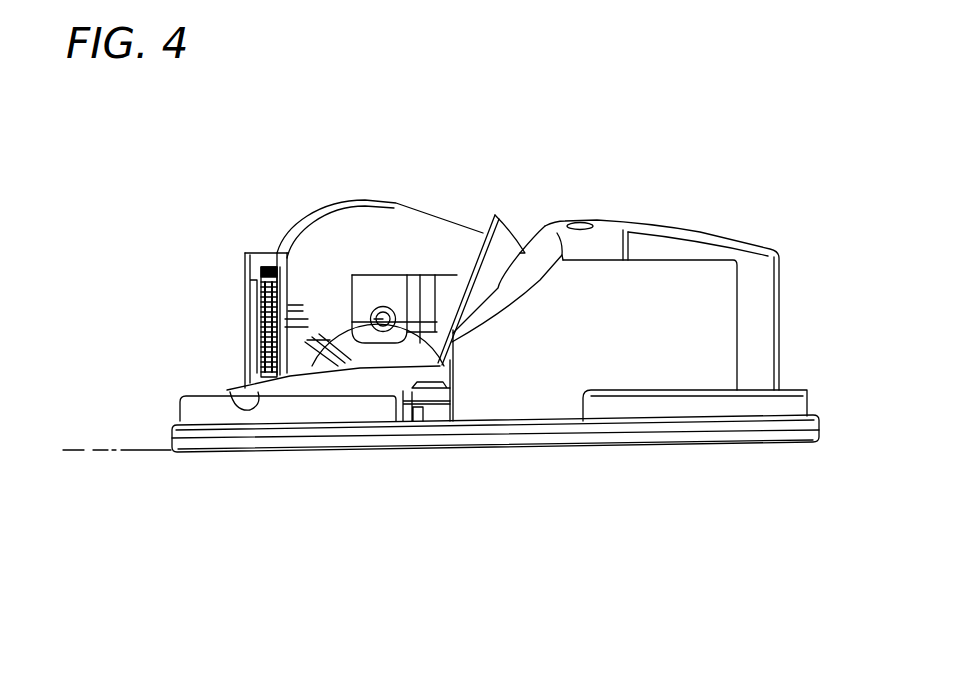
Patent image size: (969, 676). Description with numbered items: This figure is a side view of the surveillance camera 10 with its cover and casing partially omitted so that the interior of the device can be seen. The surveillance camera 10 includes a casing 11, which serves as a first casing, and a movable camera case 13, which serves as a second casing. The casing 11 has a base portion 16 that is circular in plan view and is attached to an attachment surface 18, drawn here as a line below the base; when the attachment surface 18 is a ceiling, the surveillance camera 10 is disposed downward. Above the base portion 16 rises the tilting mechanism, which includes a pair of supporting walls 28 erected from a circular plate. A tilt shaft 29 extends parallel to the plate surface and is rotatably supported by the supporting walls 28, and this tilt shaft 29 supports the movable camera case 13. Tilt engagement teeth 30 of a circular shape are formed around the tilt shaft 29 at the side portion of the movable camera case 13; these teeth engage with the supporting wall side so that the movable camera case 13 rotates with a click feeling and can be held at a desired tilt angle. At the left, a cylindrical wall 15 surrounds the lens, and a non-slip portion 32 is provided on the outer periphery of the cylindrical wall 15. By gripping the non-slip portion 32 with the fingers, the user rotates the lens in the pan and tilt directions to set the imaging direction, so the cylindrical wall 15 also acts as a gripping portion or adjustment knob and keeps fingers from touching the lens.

The surveillance camera 10 is at (695, 172).
The casing 11 is at (791, 446).
The movable camera case 13 is at (288, 223).
The cylindrical wall 15 is at (244, 283).
The base portion 16 is at (700, 448).
The attachment surface 18 is at (87, 441).
The supporting walls 28 is at (405, 222).
The tilt shaft 29 is at (387, 308).
The tilt engagement teeth 30 is at (298, 362).
The non-slip portion 32 is at (270, 266).